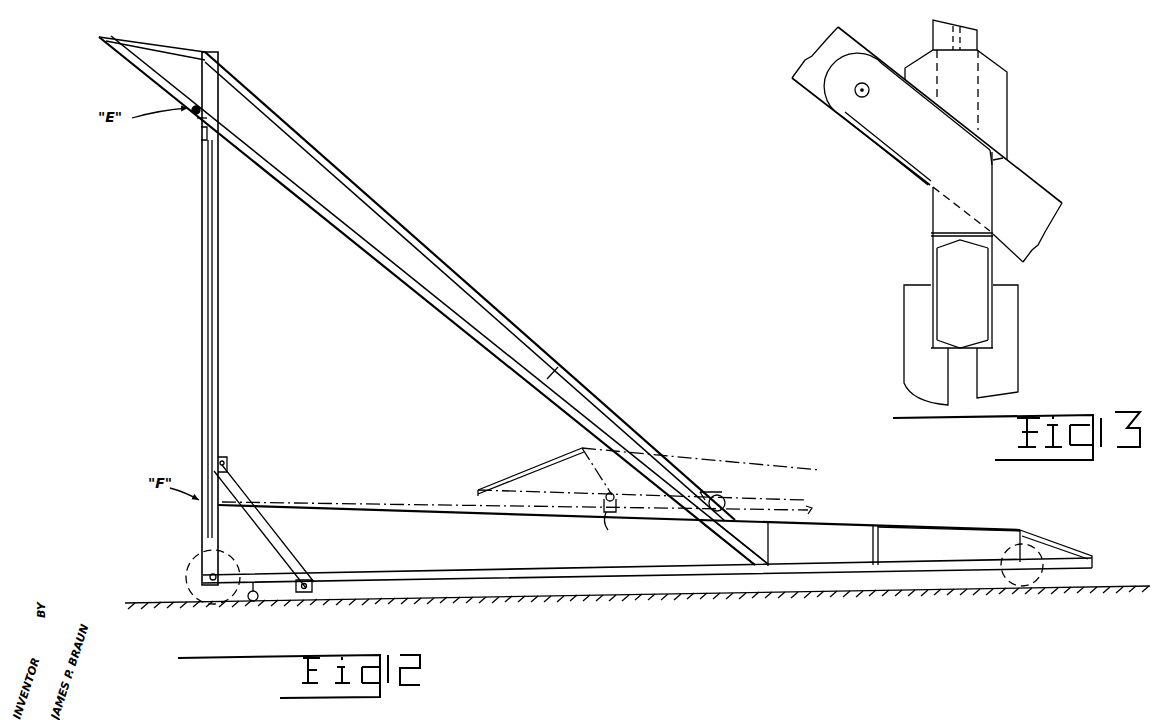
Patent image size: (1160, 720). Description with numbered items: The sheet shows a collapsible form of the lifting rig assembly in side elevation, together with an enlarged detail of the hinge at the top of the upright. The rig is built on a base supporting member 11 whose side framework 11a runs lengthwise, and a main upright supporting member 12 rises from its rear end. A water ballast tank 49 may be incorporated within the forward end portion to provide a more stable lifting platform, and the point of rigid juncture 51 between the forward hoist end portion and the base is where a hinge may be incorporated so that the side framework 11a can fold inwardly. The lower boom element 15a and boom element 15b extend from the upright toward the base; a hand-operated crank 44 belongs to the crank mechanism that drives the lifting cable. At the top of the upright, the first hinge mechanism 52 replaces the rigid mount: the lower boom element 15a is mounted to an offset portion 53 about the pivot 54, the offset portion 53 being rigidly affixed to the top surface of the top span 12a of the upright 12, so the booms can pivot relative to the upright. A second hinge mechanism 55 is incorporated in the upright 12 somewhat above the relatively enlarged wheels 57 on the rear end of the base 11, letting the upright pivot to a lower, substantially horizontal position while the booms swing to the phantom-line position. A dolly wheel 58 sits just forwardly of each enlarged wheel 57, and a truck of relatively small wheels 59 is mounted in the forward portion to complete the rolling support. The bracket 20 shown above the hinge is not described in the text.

In FIG. 12, the base supporting member 11 is at (432, 572).
In FIG. 12, the side framework 11a is at (340, 504).
In FIG. 12, the main upright supporting member 12 is at (202, 364).
In FIG. 13, the main upright supporting member 12 is at (918, 315).
In FIG. 13, the top span of upright supporting member 12a is at (932, 269).
In FIG. 12, the lower boom element 15a is at (335, 226).
In FIG. 13, the lower boom element 15a is at (1033, 191).
In FIG. 12, the boom element 15b is at (372, 212).
In FIG. 13, the bracket 20 is at (1000, 74).
In FIG. 12, the hand-operated crank 44 is at (725, 490).
In FIG. 12, the water ballast tank 49 is at (953, 533).
In FIG. 12, the point of rigid juncture 51 is at (872, 542).
In FIG. 12, the first hinge mechanism 52 is at (198, 120).
In FIG. 13, the first hinge mechanism 52 is at (1000, 163).
In FIG. 13, the offset portion of hinge mechanism 53 is at (893, 145).
In FIG. 13, the pivot 54 is at (858, 98).
In FIG. 12, the second hinge mechanism 55 is at (212, 508).
In FIG. 12, the relatively enlarged wheels 57 is at (190, 572).
In FIG. 12, the dolly wheel 58 is at (255, 603).
In FIG. 12, the truck of relatively small wheels 59 is at (1040, 586).